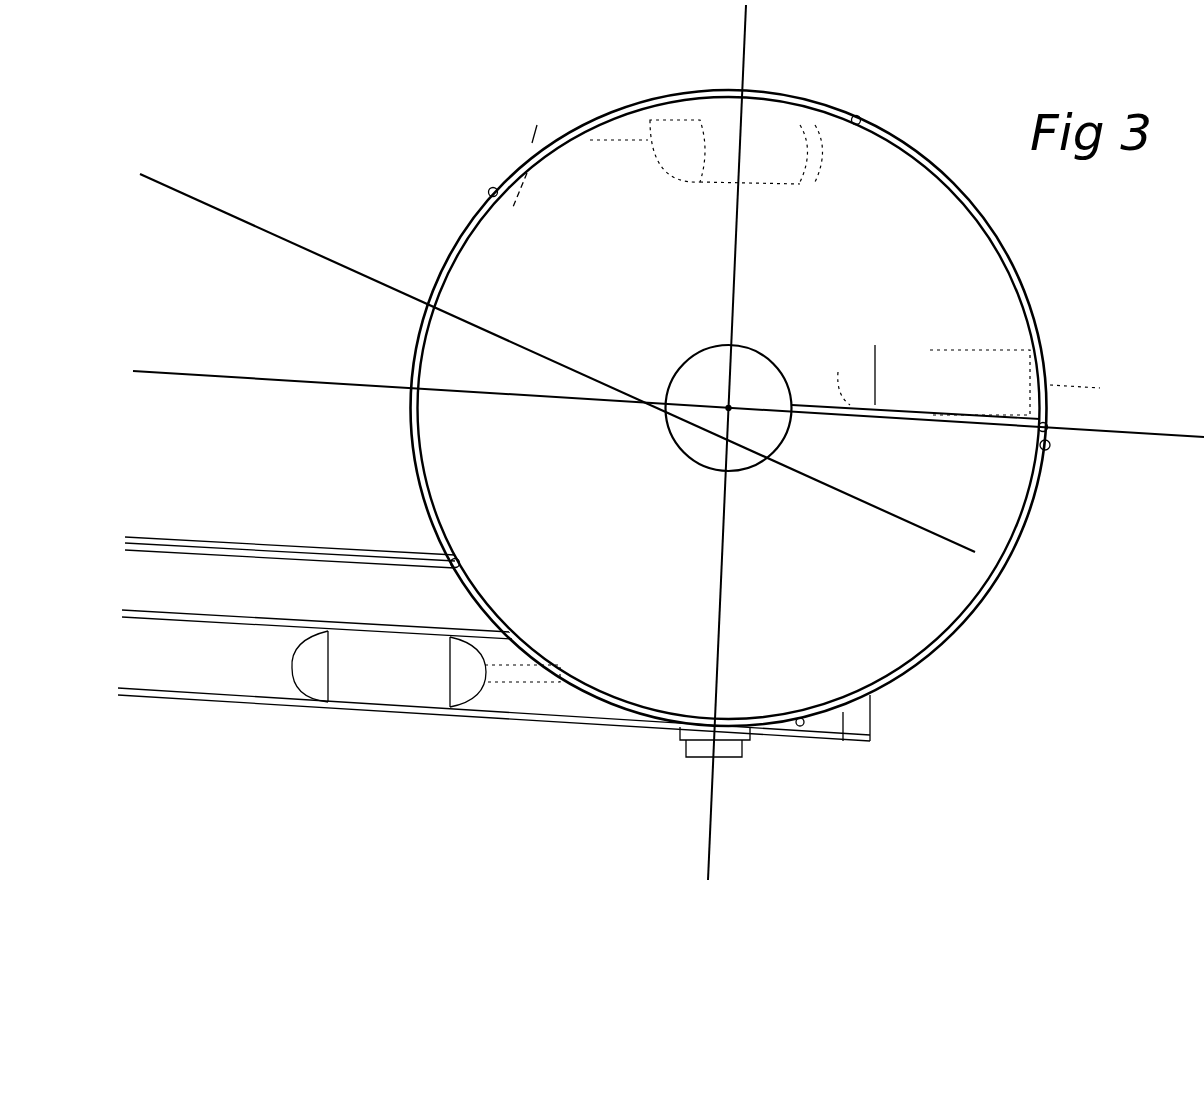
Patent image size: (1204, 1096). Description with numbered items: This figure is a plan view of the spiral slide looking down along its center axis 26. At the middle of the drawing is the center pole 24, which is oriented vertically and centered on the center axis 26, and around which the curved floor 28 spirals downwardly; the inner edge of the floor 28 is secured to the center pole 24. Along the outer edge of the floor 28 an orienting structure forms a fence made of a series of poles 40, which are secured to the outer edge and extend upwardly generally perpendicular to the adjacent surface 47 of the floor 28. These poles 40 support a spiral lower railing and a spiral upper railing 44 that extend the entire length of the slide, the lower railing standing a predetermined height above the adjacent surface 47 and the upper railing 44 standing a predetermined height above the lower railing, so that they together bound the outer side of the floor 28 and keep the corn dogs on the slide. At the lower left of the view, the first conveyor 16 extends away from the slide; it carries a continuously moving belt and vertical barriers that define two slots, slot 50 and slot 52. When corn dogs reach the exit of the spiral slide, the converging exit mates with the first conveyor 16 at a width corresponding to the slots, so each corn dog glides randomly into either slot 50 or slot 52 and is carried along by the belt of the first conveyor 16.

The first conveyor 16 is at (313, 518).
The center pole 24 is at (690, 352).
The center axis 26 is at (722, 402).
The curved floor 28 is at (585, 545).
The poles 40 is at (493, 188).
The upper railing 44 is at (462, 232).
The adjacent surface 47 is at (533, 142).
The slot 50 is at (350, 597).
The slot 52 is at (252, 665).